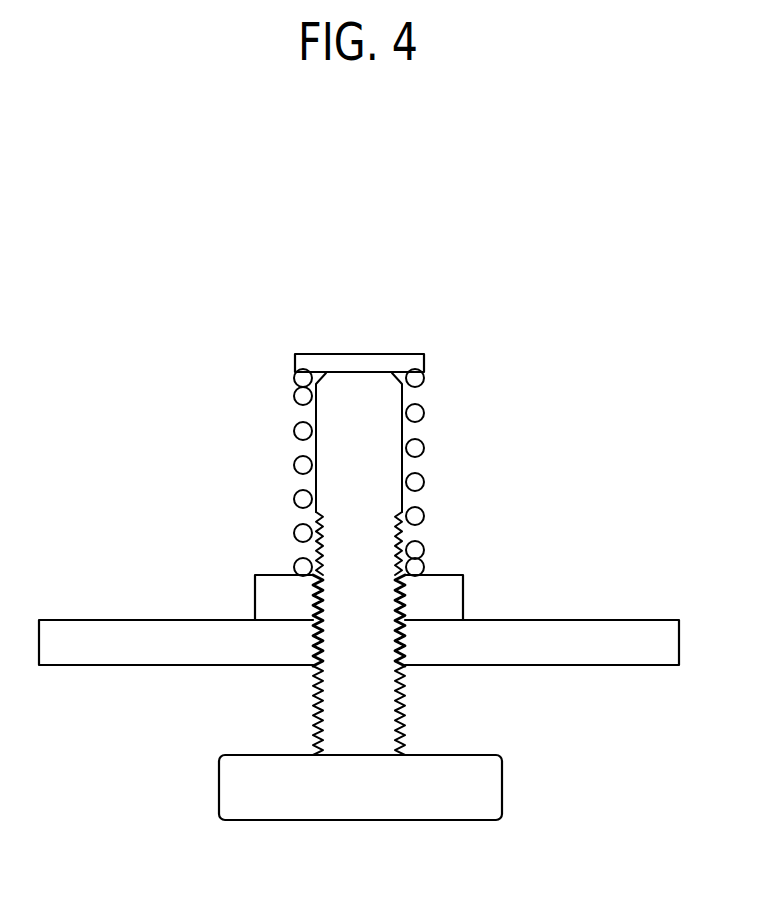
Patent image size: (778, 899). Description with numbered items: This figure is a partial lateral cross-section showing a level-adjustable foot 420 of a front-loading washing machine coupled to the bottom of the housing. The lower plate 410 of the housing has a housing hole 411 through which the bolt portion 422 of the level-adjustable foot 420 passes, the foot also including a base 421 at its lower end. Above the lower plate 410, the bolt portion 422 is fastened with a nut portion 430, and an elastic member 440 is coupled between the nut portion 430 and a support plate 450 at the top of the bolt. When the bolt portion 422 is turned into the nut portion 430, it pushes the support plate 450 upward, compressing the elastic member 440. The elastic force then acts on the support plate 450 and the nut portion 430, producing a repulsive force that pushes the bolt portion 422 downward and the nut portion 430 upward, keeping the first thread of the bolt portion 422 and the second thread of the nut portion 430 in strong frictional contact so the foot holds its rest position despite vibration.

The lower plate 410 is at (658, 622).
The housing hole 411 is at (401, 640).
The level-adjustable foot 420 is at (112, 717).
The base 421 is at (219, 788).
The bolt portion 422 is at (333, 708).
The nut portion 430 is at (255, 583).
The elastic member 440 is at (289, 376).
The support plate 450 is at (355, 358).